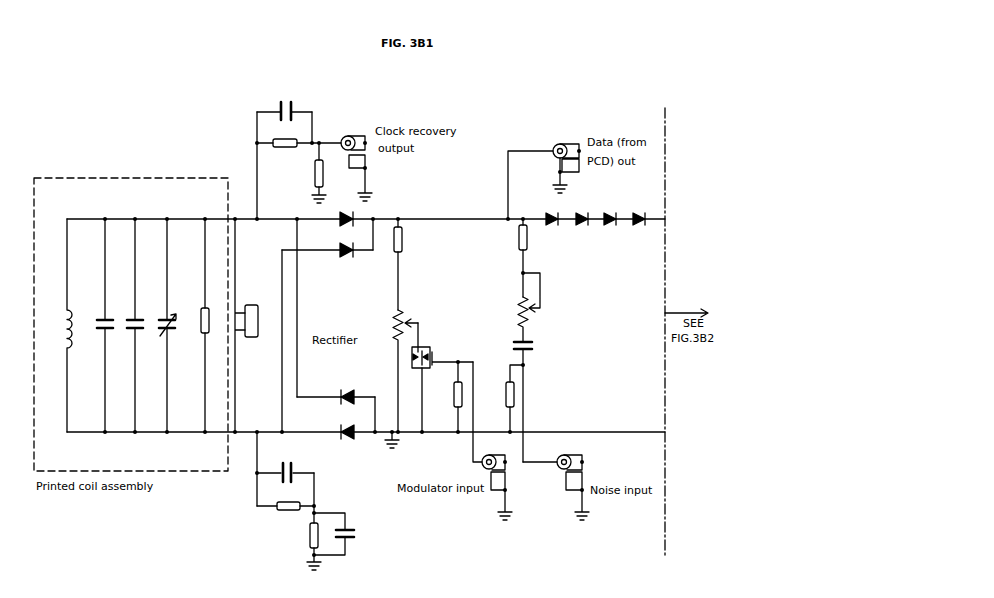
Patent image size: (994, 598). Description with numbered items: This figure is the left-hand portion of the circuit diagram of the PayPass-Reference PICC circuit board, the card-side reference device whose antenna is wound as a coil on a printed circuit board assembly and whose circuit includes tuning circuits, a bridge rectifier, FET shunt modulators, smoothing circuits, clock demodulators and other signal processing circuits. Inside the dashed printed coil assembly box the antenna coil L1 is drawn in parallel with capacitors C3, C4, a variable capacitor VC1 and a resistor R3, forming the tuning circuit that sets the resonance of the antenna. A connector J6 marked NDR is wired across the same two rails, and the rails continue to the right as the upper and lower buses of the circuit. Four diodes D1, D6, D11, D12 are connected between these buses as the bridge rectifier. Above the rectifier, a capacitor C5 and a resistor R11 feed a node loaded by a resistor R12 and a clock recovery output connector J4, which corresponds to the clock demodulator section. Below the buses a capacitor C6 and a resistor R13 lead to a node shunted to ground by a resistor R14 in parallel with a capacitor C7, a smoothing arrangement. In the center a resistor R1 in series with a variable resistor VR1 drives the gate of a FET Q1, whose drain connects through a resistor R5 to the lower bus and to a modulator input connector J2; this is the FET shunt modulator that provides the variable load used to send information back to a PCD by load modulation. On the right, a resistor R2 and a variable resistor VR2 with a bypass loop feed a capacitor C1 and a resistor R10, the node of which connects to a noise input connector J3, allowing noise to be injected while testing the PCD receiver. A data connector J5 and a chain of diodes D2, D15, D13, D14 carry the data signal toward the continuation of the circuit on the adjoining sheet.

The printed coil inductor L1 is at (60, 325).
The tank capacitor C3 is at (97, 325).
The tank capacitor C4 is at (139, 325).
The variable capacitor VC1 is at (174, 325).
The tank resistor R3 is at (212, 325).
The NDR connector J6 is at (249, 325).
The clock recovery capacitor C5 is at (284, 103).
The clock recovery resistor R11 is at (299, 151).
The clock recovery load resistor R12 is at (330, 173).
The clock recovery output SMA connector J4 is at (354, 151).
The rectifier diode D1 is at (339, 223).
The rectifier diode D6 is at (327, 255).
The rectifier diode D11 is at (336, 390).
The rectifier diode D12 is at (341, 442).
The resistor R1 is at (407, 264).
The variable resistor VR1 is at (409, 366).
The modulation transistor Q1 is at (442, 377).
The resistor R5 is at (448, 397).
The resistor R10 is at (505, 398).
The coupling capacitor C1 is at (513, 400).
The variable resistor VR2 is at (536, 307).
The resistor R2 is at (532, 258).
The diode D2 is at (549, 209).
The diode D15 is at (578, 209).
The diode D13 is at (607, 209).
The diode D14 is at (637, 209).
The data SMA connector J5 is at (543, 181).
The modulator input SMA connector J2 is at (504, 441).
The noise input SMA connector J3 is at (569, 484).
The capacitor C6 is at (285, 464).
The resistor R13 is at (285, 498).
The resistor R14 is at (302, 541).
The capacitor C7 is at (343, 534).